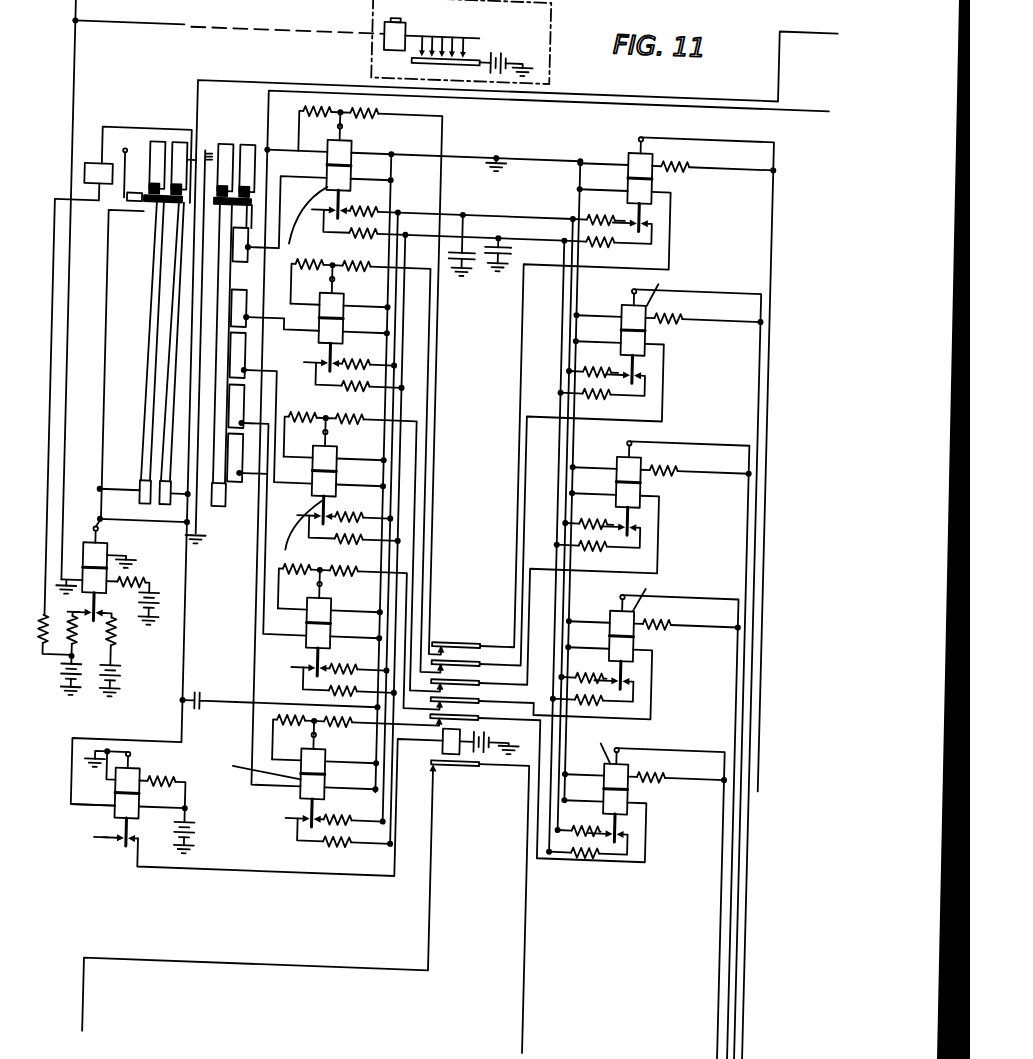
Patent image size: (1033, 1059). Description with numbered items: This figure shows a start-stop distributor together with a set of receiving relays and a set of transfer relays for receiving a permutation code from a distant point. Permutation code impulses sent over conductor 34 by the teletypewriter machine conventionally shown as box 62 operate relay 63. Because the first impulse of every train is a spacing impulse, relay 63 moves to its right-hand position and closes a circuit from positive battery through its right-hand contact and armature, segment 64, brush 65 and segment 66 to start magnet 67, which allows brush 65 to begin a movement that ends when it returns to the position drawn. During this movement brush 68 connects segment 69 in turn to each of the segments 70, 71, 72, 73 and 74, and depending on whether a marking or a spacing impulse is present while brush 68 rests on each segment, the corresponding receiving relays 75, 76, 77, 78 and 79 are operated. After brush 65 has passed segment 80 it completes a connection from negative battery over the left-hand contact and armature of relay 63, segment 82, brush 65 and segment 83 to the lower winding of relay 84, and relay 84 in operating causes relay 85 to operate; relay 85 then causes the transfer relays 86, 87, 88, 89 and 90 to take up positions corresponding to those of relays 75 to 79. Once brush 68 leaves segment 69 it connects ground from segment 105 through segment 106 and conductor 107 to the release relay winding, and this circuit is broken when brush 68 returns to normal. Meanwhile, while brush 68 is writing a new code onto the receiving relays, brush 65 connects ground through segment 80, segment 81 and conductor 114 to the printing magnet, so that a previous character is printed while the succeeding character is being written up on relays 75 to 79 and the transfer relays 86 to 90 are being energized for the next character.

The conductor 34 is at (74, 65).
The teletypewriter machine 62 is at (372, 4).
The relay 63 is at (96, 566).
The segment 64 is at (153, 216).
The brush 65 is at (152, 188).
The segment 66 is at (177, 172).
The start magnet 67 is at (94, 167).
The brush 68 is at (255, 196).
The segment 69 is at (220, 286).
The segment 70 is at (254, 261).
The segment 71 is at (255, 287).
The segment 72 is at (243, 368).
The segment 73 is at (241, 390).
The segment 74 is at (243, 466).
The receiving relay 75 is at (346, 148).
The receiving relay 76 is at (344, 303).
The receiving relay 77 is at (342, 455).
The receiving relay 78 is at (340, 610).
The receiving relay 79 is at (337, 760).
The segment 80 is at (155, 246).
The segment 81 is at (170, 265).
The segment 82 is at (149, 487).
The segment 83 is at (181, 505).
The relay 84 is at (133, 795).
The relay 85 is at (459, 735).
The transfer relay 86 is at (632, 146).
The transfer relay 87 is at (630, 301).
The transfer relay 88 is at (629, 455).
The transfer relay 89 is at (625, 609).
The transfer relay 90 is at (622, 755).
The segment 105 is at (222, 500).
The segment 106 is at (240, 512).
The conductor 107 is at (707, 89).
The conductor 114 is at (292, 78).